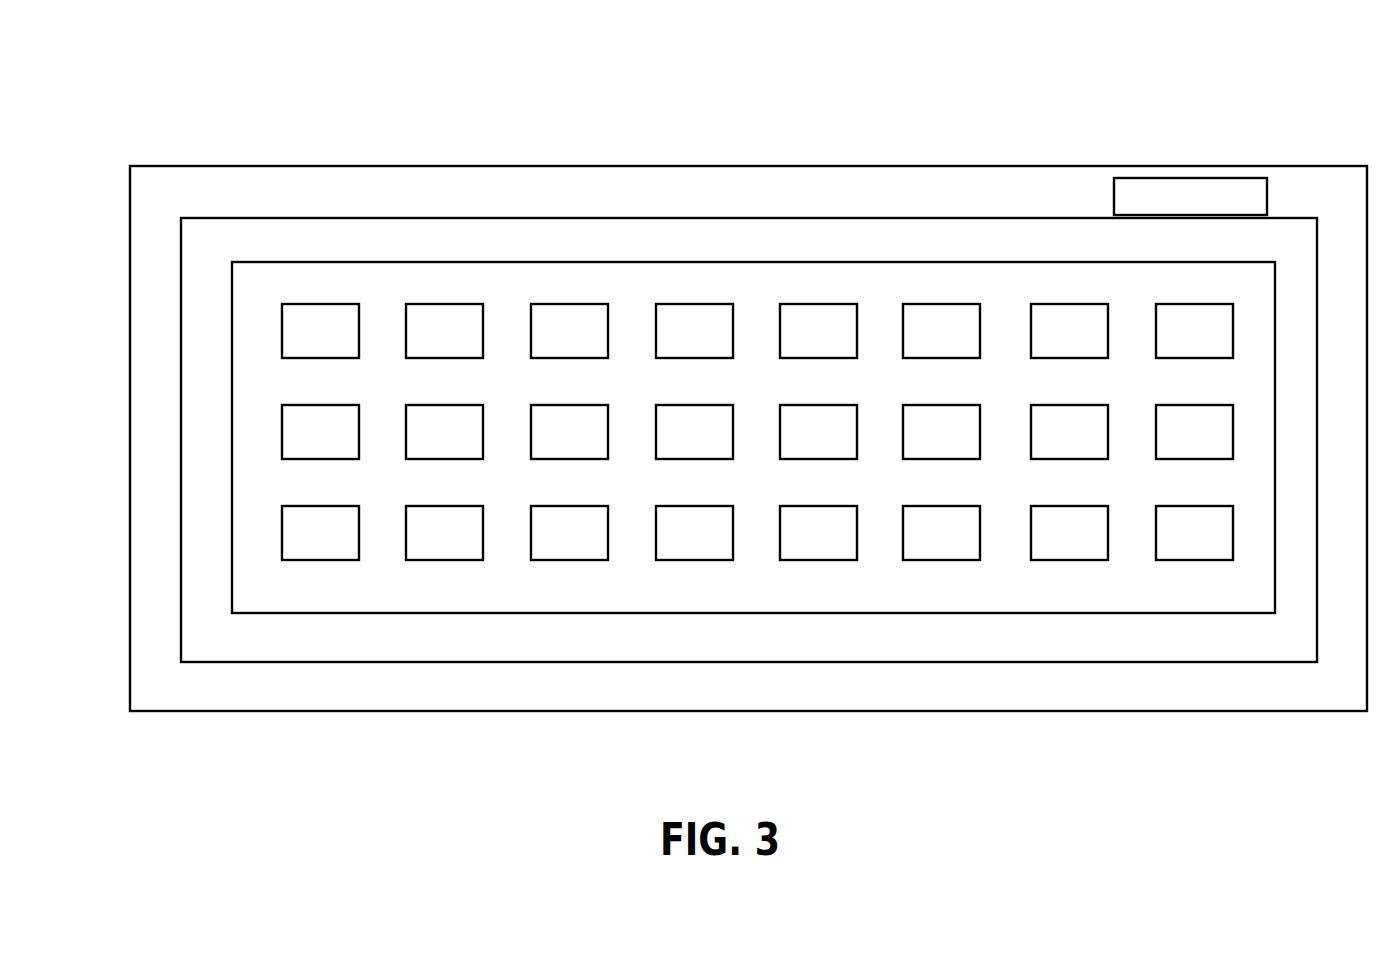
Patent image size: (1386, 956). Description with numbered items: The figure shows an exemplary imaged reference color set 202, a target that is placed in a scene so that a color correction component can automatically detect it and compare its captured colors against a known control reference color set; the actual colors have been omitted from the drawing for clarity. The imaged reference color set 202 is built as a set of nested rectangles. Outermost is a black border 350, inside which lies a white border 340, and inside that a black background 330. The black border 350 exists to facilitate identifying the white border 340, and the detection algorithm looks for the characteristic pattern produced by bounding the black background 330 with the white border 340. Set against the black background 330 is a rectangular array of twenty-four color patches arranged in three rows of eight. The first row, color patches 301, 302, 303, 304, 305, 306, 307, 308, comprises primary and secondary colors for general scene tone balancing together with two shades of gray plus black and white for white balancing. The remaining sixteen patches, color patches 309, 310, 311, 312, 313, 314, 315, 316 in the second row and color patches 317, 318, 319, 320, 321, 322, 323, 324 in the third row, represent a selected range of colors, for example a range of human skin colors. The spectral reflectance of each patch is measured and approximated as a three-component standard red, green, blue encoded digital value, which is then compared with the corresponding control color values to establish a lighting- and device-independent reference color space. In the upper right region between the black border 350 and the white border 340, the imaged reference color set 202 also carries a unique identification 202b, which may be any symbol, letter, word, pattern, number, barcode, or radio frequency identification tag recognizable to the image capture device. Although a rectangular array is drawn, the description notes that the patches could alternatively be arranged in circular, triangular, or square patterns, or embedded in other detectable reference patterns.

The imaged reference color set 202 is at (375, 62).
The unique identification 202b is at (1163, 206).
The black border 350 is at (651, 191).
The white border 340 is at (838, 235).
The black background 330 is at (1007, 288).
The color patch 301 is at (320, 331).
The color patch 302 is at (444, 331).
The color patch 303 is at (569, 331).
The color patch 304 is at (694, 331).
The color patch 305 is at (818, 331).
The color patch 306 is at (941, 331).
The color patch 307 is at (1069, 331).
The color patch 308 is at (1194, 331).
The color patch 309 is at (320, 432).
The color patch 310 is at (444, 432).
The color patch 311 is at (569, 432).
The color patch 312 is at (694, 432).
The color patch 313 is at (818, 432).
The color patch 314 is at (941, 432).
The color patch 315 is at (1069, 432).
The color patch 316 is at (1194, 432).
The color patch 317 is at (320, 533).
The color patch 318 is at (444, 533).
The color patch 319 is at (569, 533).
The color patch 320 is at (694, 533).
The color patch 321 is at (818, 533).
The color patch 322 is at (941, 533).
The color patch 323 is at (1069, 533).
The color patch 324 is at (1194, 533).